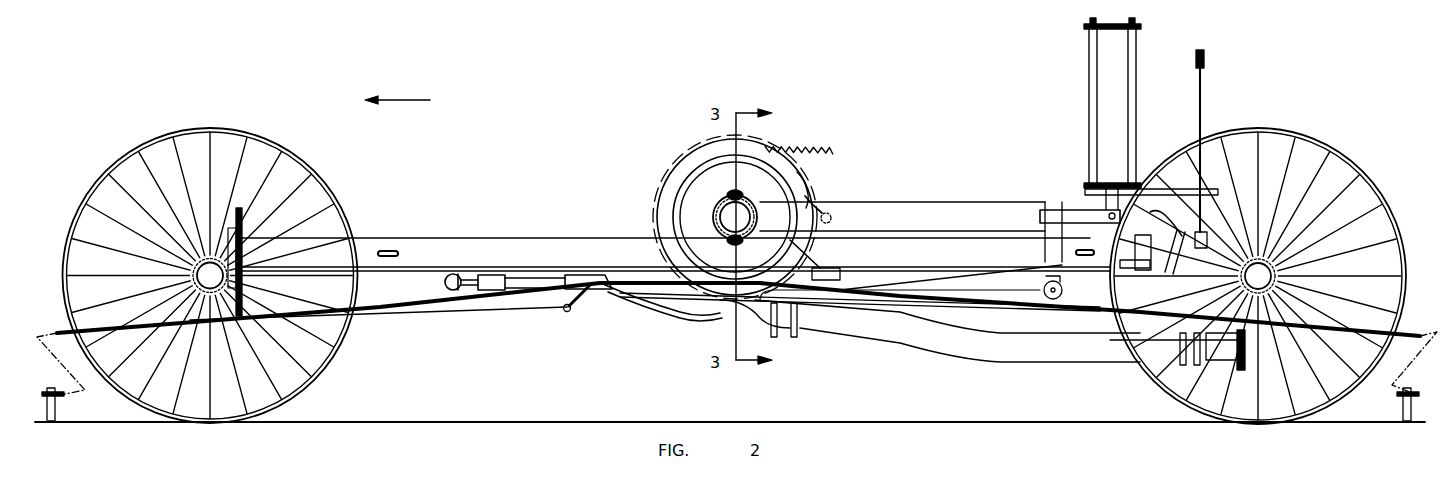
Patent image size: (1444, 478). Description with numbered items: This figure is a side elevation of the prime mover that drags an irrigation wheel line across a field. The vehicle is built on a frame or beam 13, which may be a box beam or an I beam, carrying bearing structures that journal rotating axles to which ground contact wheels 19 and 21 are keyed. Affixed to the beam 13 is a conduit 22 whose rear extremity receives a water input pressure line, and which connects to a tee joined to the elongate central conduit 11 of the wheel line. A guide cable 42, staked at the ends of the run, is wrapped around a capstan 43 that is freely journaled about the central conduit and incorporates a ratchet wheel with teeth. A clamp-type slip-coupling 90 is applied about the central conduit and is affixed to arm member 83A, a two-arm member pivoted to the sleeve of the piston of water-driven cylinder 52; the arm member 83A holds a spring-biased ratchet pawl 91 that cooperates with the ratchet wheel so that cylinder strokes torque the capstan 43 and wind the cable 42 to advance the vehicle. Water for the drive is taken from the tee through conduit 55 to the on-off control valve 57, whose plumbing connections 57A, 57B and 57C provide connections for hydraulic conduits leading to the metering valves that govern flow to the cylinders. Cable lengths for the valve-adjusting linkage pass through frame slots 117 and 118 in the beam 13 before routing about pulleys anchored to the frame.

The wheel 19 is at (325, 178).
The wheel 21 is at (1362, 162).
The frame or beam 13 is at (600, 245).
The guide cable 42 is at (58, 405).
The frame slot 117 is at (392, 248).
The plumbing connection 57C is at (462, 272).
The plumbing connection 57B is at (485, 274).
The plumbing connection 57A is at (528, 278).
The on-off control valve 57 is at (592, 296).
The capstan 43 is at (690, 175).
The clamp-type slip-coupling 90 is at (724, 205).
The central conduit 11 is at (742, 200).
The ratchet pawl 91 is at (817, 200).
The arm member 83A is at (862, 215).
The cylinder 52 is at (1113, 122).
The frame slot 118 is at (1083, 250).
The conduit 22 is at (1060, 353).
The conduit 55 is at (690, 312).